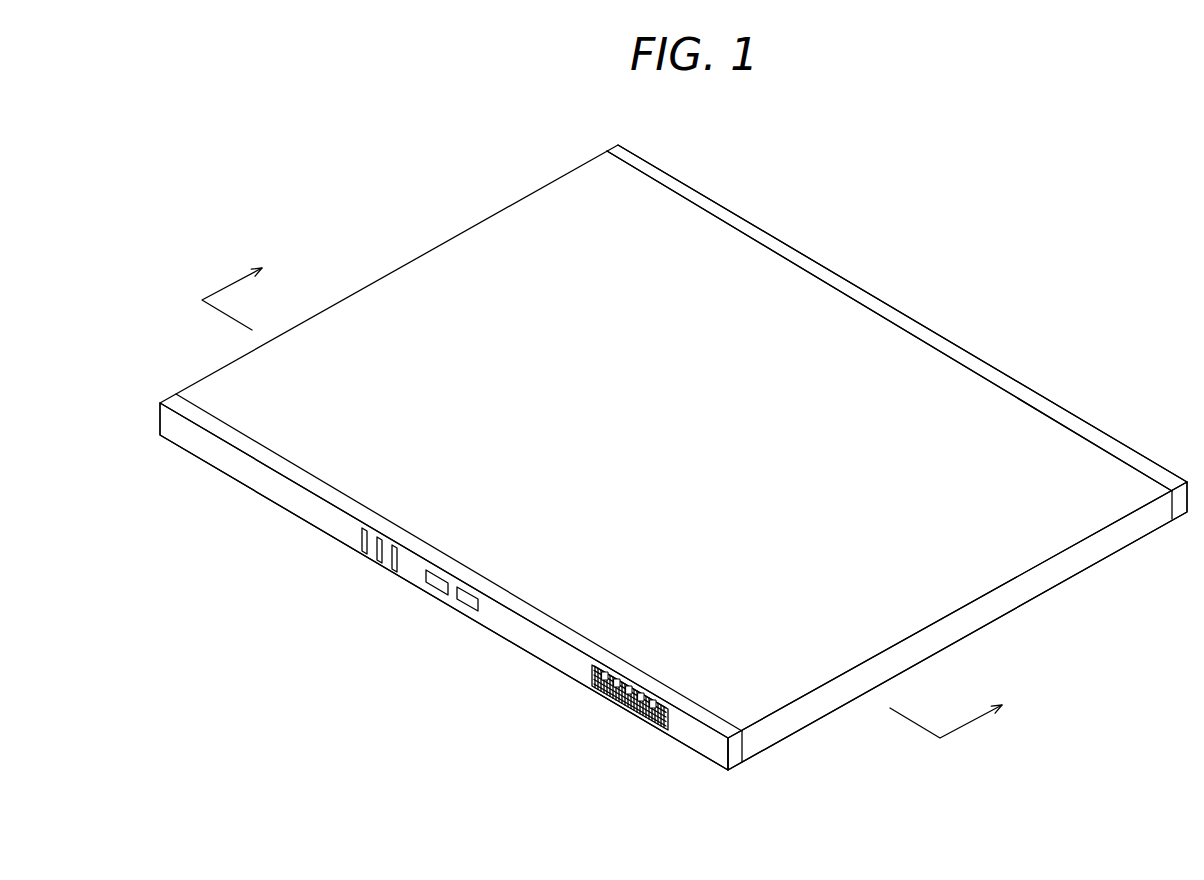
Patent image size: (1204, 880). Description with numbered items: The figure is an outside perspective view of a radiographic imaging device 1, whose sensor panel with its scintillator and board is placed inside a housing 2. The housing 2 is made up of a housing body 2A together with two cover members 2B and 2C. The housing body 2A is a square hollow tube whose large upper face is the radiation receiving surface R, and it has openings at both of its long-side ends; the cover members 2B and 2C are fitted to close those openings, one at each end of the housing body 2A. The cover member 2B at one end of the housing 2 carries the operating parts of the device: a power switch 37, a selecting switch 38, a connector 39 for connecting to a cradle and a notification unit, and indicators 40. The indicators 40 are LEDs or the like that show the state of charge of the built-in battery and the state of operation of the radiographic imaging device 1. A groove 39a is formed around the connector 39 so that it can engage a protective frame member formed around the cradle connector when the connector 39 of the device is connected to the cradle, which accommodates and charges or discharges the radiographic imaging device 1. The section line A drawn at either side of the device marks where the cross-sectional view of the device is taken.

The radiographic imaging device 1 is at (1022, 340).
The housing 2 is at (522, 193).
The housing body 2A is at (1065, 568).
The cover member 2B is at (237, 465).
The cover member 2C is at (793, 261).
The radiation receiving surface R is at (438, 282).
The power switch 37 is at (457, 608).
The selecting switch 38 is at (424, 590).
The connector 39 is at (592, 742).
The groove 39a is at (596, 689).
The indicators 40 is at (394, 572).
The section line A- A is at (615, 492).